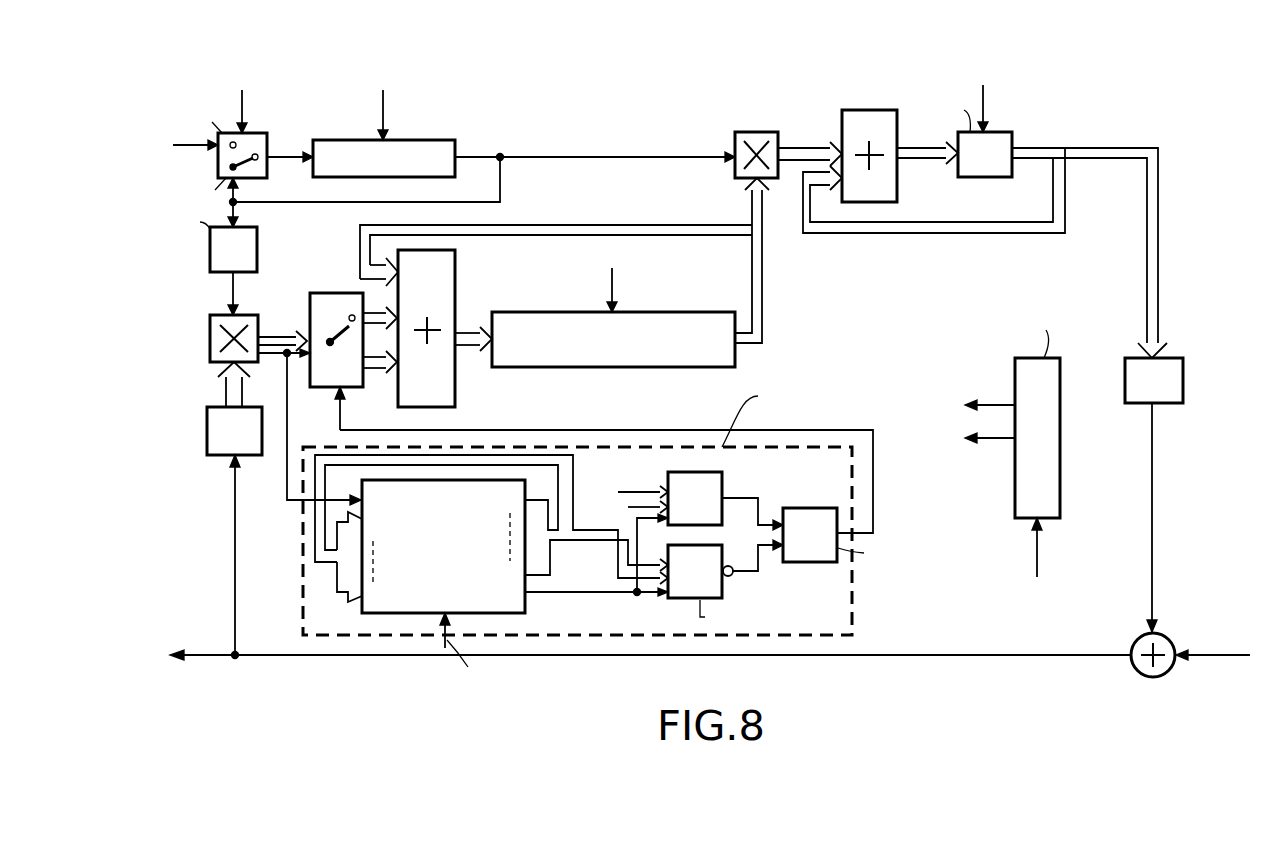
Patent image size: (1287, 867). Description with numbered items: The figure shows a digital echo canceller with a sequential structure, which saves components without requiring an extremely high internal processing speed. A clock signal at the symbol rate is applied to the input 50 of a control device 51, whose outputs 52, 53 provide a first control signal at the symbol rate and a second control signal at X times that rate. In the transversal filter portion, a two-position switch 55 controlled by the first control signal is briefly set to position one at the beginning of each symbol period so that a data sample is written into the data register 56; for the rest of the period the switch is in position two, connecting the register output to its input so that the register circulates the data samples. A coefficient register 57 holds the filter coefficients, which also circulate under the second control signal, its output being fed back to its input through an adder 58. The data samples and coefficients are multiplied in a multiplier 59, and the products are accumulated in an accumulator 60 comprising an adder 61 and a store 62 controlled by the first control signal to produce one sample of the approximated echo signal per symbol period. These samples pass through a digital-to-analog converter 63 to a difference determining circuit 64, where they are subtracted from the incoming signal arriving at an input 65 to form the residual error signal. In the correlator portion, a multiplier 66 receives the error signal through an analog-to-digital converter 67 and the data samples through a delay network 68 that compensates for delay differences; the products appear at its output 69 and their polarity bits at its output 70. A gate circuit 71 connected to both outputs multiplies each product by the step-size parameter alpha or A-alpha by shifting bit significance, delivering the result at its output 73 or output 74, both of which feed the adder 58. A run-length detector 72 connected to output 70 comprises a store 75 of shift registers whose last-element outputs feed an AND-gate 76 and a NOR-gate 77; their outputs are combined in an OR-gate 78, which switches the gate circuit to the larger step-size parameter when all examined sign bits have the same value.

The input 50 is at (1040, 548).
The control device 51 is at (1060, 470).
The output 52 is at (991, 405).
The output 53 is at (993, 434).
The two-position switch 55 is at (268, 140).
The data register 56 is at (456, 140).
The coefficient register 57 is at (680, 367).
The adder 58 is at (456, 384).
The multiplier 59 is at (766, 132).
The accumulator 60 is at (985, 214).
The adder 61 is at (866, 110).
The store 62 is at (1012, 128).
The digital-to-analog converter 63 is at (1183, 370).
The difference determining circuit 64 is at (1170, 640).
The input 65 is at (1232, 657).
The multiplier 66 is at (210, 344).
The analog-to-digital converter 67 is at (207, 432).
The delay network 68 is at (210, 249).
The output 69 is at (270, 332).
The output 70 is at (276, 356).
The gate circuit 71 is at (332, 293).
The run-length detector 72 is at (820, 481).
The output 73 is at (556, 277).
The output 74 is at (380, 378).
The store 75 is at (366, 613).
The AND-gate 76 is at (668, 472).
The NOR-gate 77 is at (680, 598).
The OR-gate 78 is at (806, 562).